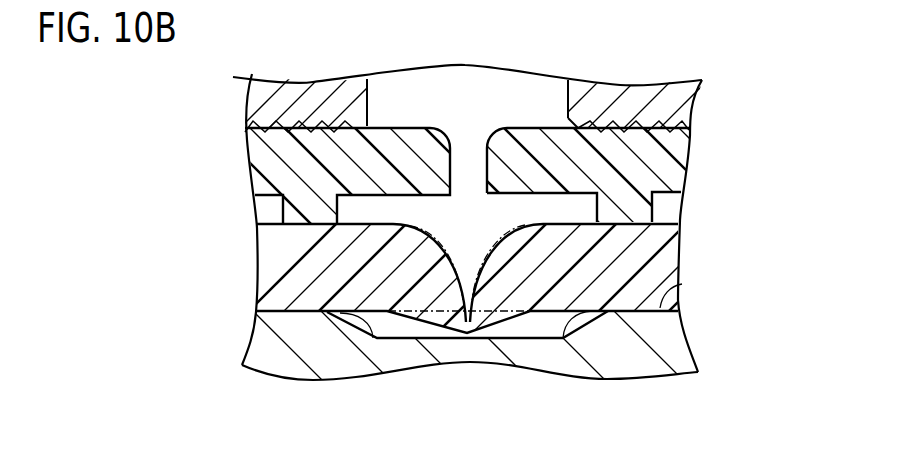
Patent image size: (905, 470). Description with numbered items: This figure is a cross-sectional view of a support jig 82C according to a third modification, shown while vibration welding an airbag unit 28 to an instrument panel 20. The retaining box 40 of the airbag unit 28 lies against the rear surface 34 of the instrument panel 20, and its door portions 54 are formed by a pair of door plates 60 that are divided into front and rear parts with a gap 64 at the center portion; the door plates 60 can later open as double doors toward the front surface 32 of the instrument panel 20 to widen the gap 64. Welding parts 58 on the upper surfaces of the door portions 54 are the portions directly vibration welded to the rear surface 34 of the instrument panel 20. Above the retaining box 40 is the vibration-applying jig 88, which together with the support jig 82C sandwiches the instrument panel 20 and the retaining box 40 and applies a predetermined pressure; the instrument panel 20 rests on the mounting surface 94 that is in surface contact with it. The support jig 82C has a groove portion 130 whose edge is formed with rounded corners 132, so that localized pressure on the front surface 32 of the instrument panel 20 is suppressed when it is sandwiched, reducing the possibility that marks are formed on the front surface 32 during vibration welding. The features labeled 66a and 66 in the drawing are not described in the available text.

The vibration-applying jig 88 is at (315, 95).
The rear surface 34 is at (386, 224).
The gap 64 is at (467, 150).
The retaining box 40 is at (427, 235).
The airbag unit 28 is at (245, 154).
The door plates 60 is at (605, 235).
The door portions 54 is at (675, 148).
The welding parts 58 is at (638, 212).
The instrument panel 20 is at (257, 243).
The tip portion 66a is at (460, 254).
The protrusion 66 is at (468, 320).
The groove portion 130 is at (335, 305).
The rounded corners 132 is at (373, 340).
The mounting surface 94 is at (682, 284).
The support jig 82C is at (386, 235).
The front surface 32 is at (245, 339).